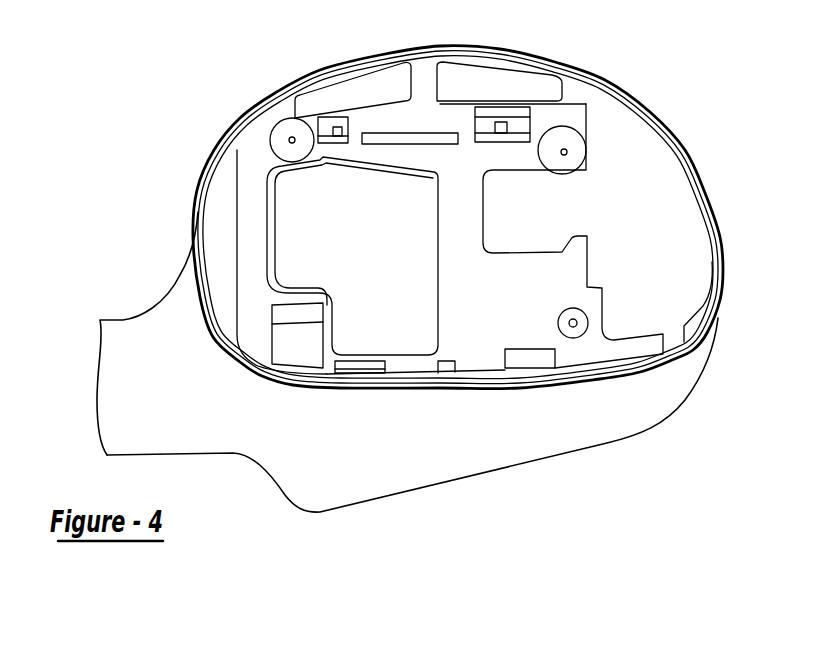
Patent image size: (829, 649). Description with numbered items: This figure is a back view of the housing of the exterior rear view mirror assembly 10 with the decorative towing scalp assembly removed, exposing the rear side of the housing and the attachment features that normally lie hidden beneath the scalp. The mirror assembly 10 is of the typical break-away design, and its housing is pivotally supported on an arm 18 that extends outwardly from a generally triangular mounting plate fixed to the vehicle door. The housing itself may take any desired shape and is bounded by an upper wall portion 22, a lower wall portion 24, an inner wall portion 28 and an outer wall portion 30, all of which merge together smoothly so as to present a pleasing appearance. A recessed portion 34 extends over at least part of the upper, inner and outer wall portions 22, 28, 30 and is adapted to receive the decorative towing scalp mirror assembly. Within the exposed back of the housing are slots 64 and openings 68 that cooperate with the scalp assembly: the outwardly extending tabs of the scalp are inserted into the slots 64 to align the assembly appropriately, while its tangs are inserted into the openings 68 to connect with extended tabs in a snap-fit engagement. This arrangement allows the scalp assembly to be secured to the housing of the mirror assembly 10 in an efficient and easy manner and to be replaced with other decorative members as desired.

The exterior rear view mirror assembly 10 is at (666, 64).
The arm 18 is at (122, 343).
The upper wall portion 22 is at (479, 57).
The lower wall portion 24 is at (485, 458).
The inner wall portion 28 is at (220, 170).
The outer wall portion 30 is at (723, 272).
The recessed portion 34 is at (668, 128).
The slots 64 is at (336, 122).
The openings 68 is at (358, 373).